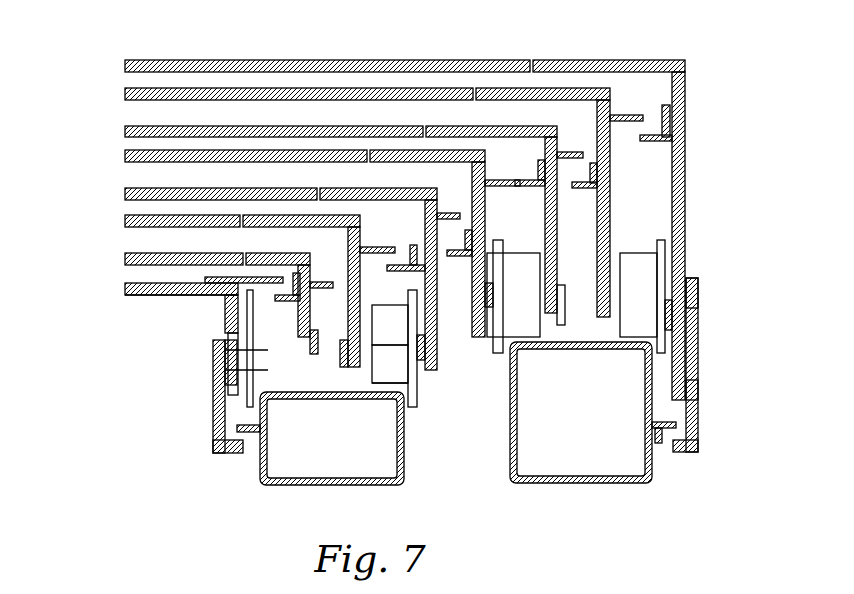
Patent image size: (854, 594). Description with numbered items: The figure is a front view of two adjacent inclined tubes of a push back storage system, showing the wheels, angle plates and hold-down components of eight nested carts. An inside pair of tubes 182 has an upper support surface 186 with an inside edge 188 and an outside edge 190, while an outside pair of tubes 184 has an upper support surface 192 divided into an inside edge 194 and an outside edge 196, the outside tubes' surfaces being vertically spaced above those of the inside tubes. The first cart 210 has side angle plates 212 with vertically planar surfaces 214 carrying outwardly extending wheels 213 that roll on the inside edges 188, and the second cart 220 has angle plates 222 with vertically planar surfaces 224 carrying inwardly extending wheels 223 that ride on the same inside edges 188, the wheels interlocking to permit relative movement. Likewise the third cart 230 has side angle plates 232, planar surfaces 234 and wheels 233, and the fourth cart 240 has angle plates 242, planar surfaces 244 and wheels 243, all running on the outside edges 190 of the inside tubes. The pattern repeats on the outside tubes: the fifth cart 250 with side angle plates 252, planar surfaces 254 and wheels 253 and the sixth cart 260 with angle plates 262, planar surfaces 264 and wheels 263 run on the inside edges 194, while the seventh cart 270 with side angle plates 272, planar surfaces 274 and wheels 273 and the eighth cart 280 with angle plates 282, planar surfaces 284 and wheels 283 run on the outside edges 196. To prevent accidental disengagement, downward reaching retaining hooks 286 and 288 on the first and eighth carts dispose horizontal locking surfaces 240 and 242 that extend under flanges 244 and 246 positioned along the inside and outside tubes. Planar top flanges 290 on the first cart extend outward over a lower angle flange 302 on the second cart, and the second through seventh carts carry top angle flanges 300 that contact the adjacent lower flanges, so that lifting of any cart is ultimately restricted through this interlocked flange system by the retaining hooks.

The inside pair of tubes 182 is at (323, 460).
The outside pair of tubes 184 is at (581, 422).
The upper support surface 186 is at (345, 392).
The inside edge 188 is at (278, 400).
The outside edge 190 is at (388, 397).
The upper support surface 192 is at (525, 318).
The inside edge 194 is at (527, 318).
The outside edge 196 is at (699, 385).
The first cart 210 is at (128, 287).
The side angle plate 212 is at (157, 297).
The wheels 213 is at (218, 358).
The vertically planar surface 214 is at (225, 316).
The second cart 220 is at (128, 256).
The angle plate 222 is at (212, 252).
The wheels 223 is at (215, 378).
The vertically planar surface 224 is at (345, 355).
The third cart 230 is at (128, 220).
The side angle plate 232 is at (260, 215).
The wheels 233 is at (395, 378).
The vertically planar surface 234 is at (342, 347).
The horizontal locking surface 240 is at (128, 192).
The horizontal locking surface 242 is at (317, 190).
The wheels 243 is at (400, 375).
The flange 244 is at (250, 407).
The flange 246 is at (668, 442).
The fifth cart 250 is at (128, 154).
The side angle plate 252 is at (380, 150).
The wheels 253 is at (545, 320).
The vertically planar surface 254 is at (470, 330).
The sixth cart 260 is at (128, 130).
The angle plate 262 is at (436, 126).
The wheels 263 is at (550, 318).
The vertically planar surface 264 is at (548, 283).
The seventh cart 270 is at (128, 92).
The side angle plate 272 is at (490, 88).
The wheels 273 is at (655, 300).
The vertically planar surface 274 is at (610, 238).
The eighth cart 280 is at (127, 60).
The angle plate 282 is at (562, 60).
The wheels 283 is at (672, 328).
The vertically planar surface 284 is at (698, 272).
The retaining hook 286 is at (214, 446).
The retaining hook 288 is at (698, 398).
The planar top flange 290 is at (173, 284).
The top angle flange 300 is at (598, 118).
The lower angle flange 302 is at (600, 200).